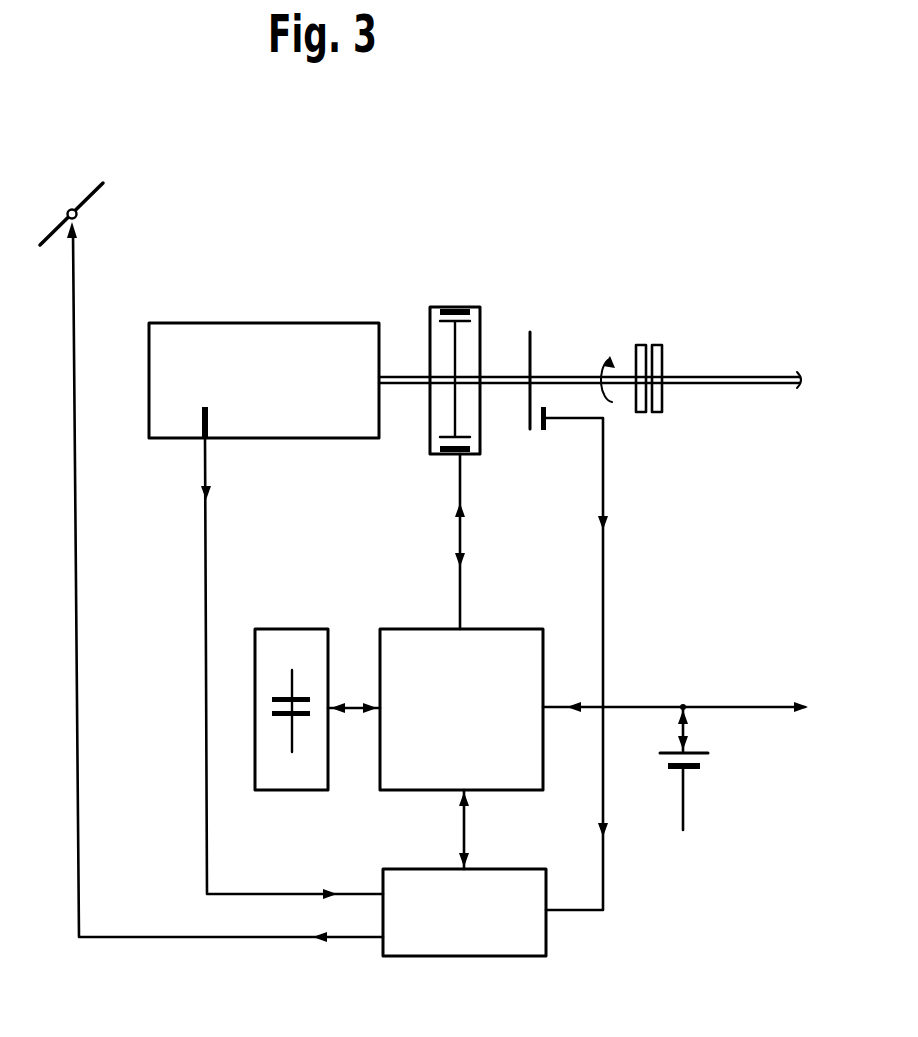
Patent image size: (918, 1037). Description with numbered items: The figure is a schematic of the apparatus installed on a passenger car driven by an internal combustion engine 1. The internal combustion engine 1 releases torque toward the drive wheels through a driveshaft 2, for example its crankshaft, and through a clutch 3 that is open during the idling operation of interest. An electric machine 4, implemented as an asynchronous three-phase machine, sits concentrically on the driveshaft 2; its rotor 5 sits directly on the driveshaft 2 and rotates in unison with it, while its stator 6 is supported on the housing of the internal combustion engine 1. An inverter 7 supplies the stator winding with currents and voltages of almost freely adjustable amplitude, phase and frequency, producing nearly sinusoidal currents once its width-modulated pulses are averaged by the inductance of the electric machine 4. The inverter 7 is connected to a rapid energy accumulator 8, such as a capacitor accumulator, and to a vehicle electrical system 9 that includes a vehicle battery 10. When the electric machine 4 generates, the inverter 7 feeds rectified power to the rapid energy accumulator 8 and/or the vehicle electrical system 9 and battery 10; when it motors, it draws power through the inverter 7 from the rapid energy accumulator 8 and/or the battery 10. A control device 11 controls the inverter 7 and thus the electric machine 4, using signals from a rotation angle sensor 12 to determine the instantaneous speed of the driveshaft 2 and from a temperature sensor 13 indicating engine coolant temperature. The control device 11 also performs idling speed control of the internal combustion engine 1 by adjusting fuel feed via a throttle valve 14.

The internal combustion engine 1 is at (248, 330).
The driveshaft 2 is at (566, 378).
The clutch 3 is at (645, 343).
The electric machine 4 is at (412, 303).
The rotor 5 is at (458, 345).
The stator 6 is at (455, 308).
The inverter 7 is at (420, 645).
The rapid energy accumulator 8 is at (286, 642).
The vehicle electrical system 9 is at (687, 707).
The vehicle battery 10 is at (707, 760).
The control device 11 is at (492, 932).
The rotation angle sensor 12 is at (546, 432).
The temperature sensor 13 is at (200, 415).
The throttle valve 14 is at (80, 195).